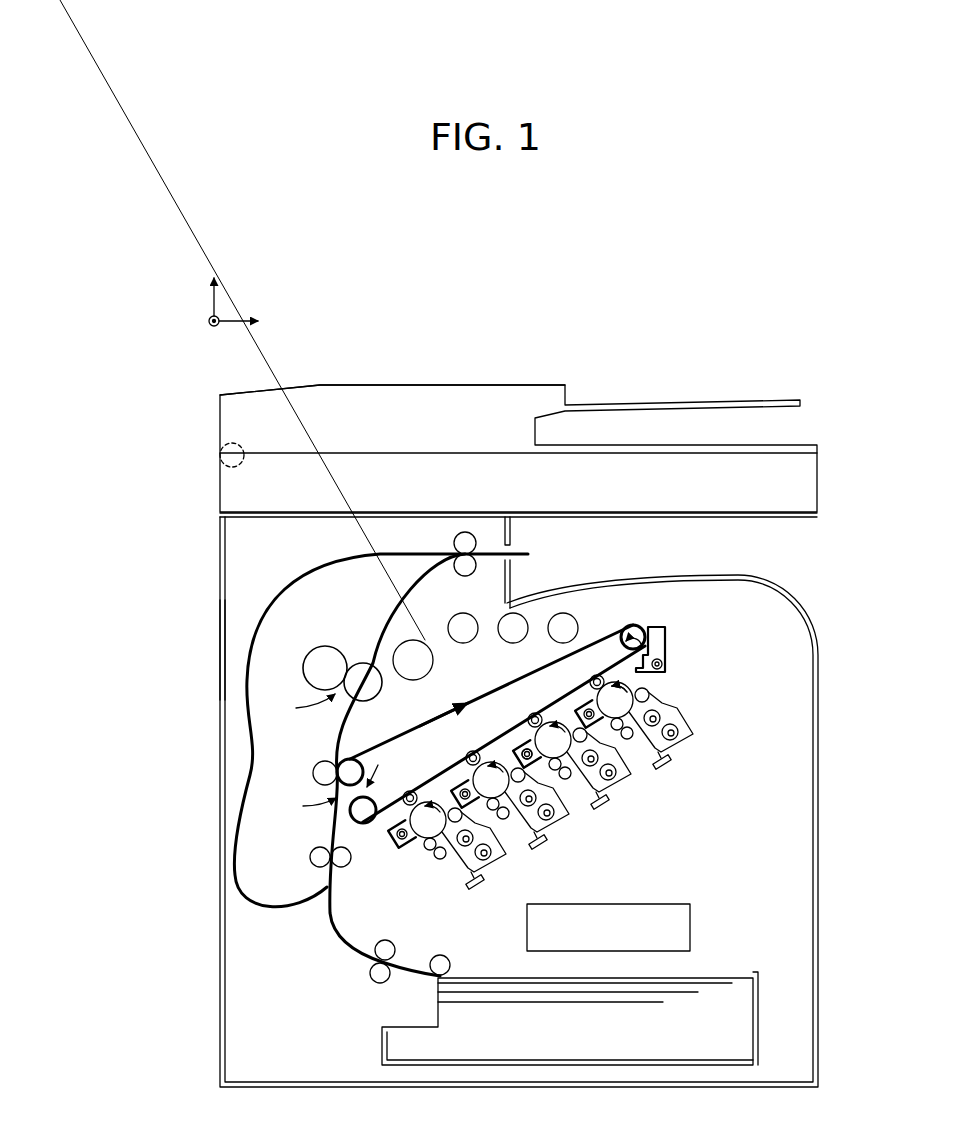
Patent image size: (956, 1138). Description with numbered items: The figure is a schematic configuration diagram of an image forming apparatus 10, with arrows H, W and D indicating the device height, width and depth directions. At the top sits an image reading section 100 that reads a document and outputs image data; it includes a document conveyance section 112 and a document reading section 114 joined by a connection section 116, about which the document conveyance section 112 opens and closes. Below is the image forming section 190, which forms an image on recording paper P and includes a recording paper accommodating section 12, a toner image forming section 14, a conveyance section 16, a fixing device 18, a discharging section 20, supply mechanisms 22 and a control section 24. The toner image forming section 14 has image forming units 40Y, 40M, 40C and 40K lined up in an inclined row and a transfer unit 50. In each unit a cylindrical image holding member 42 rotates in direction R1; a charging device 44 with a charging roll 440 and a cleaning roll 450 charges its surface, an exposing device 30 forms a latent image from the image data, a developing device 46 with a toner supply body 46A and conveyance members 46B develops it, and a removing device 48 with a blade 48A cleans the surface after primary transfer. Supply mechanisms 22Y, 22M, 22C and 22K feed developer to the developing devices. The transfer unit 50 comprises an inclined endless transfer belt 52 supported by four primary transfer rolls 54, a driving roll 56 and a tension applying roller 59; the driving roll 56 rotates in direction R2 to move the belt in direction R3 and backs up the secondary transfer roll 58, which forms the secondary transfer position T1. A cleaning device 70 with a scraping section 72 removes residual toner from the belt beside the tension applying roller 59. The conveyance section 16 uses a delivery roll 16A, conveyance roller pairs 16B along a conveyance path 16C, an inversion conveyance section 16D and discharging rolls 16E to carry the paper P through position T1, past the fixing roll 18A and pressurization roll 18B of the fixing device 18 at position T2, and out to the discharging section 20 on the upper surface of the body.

The image forming apparatus 10 is at (689, 276).
The recording paper accommodating section 12 is at (599, 996).
The toner image forming section 14 is at (571, 785).
The conveyance section 16 is at (350, 794).
The delivery roll 16A is at (438, 956).
The conveyance roller pairs 16B is at (318, 857).
The conveyance path 16C is at (336, 937).
The inversion conveyance section 16D is at (253, 800).
The discharging rolls 16E is at (455, 545).
The fixing device 18 is at (341, 639).
The fixing roll 18A is at (370, 664).
The pressurization roll 18B is at (313, 660).
The discharging section 20 is at (617, 572).
The supply mechanisms 22 is at (509, 598).
The supply mechanism 22K is at (420, 640).
The supply mechanism 22C is at (478, 605).
The supply mechanism 22M is at (518, 642).
The supply mechanism 22Y is at (572, 616).
The control section 24 is at (527, 929).
The exposing device 30 is at (698, 812).
The image forming unit 40K is at (491, 865).
The image forming unit 40C is at (560, 832).
The image forming unit 40M is at (624, 785).
The image forming unit 40Y is at (679, 785).
The image holding member 42 is at (651, 693).
The charging device 44 is at (698, 827).
The charging roll 440 is at (658, 756).
The cleaning roll 450 is at (668, 768).
The developing device 46 is at (706, 714).
The toner supply body 46A is at (661, 716).
The conveyance members 46B is at (679, 733).
The removing device 48 is at (559, 717).
The blade 48A is at (542, 742).
The transfer unit 50 is at (500, 703).
The transfer belt 52 is at (402, 736).
The primary transfer rolls 54 is at (415, 793).
The driving roll 56 is at (350, 758).
The secondary transfer roll 58 is at (318, 765).
The tension applying roller 59 is at (638, 625).
The cleaning device 70 is at (677, 632).
The scraping section 72 is at (663, 660).
The image reading section 100 is at (493, 440).
The document conveyance section 112 is at (220, 412).
The document reading section 114 is at (220, 498).
The connection section 116 is at (220, 463).
The image forming section 190 is at (215, 610).
The recording paper P is at (712, 976).
The secondary transfer position T1 is at (307, 804).
The position T2 is at (302, 707).
The arrow R1 is at (615, 699).
The arrow R2 is at (389, 770).
The arrow R3 is at (430, 729).
The arrow H is at (215, 283).
The arrow W is at (253, 322).
The arrow D is at (224, 310).